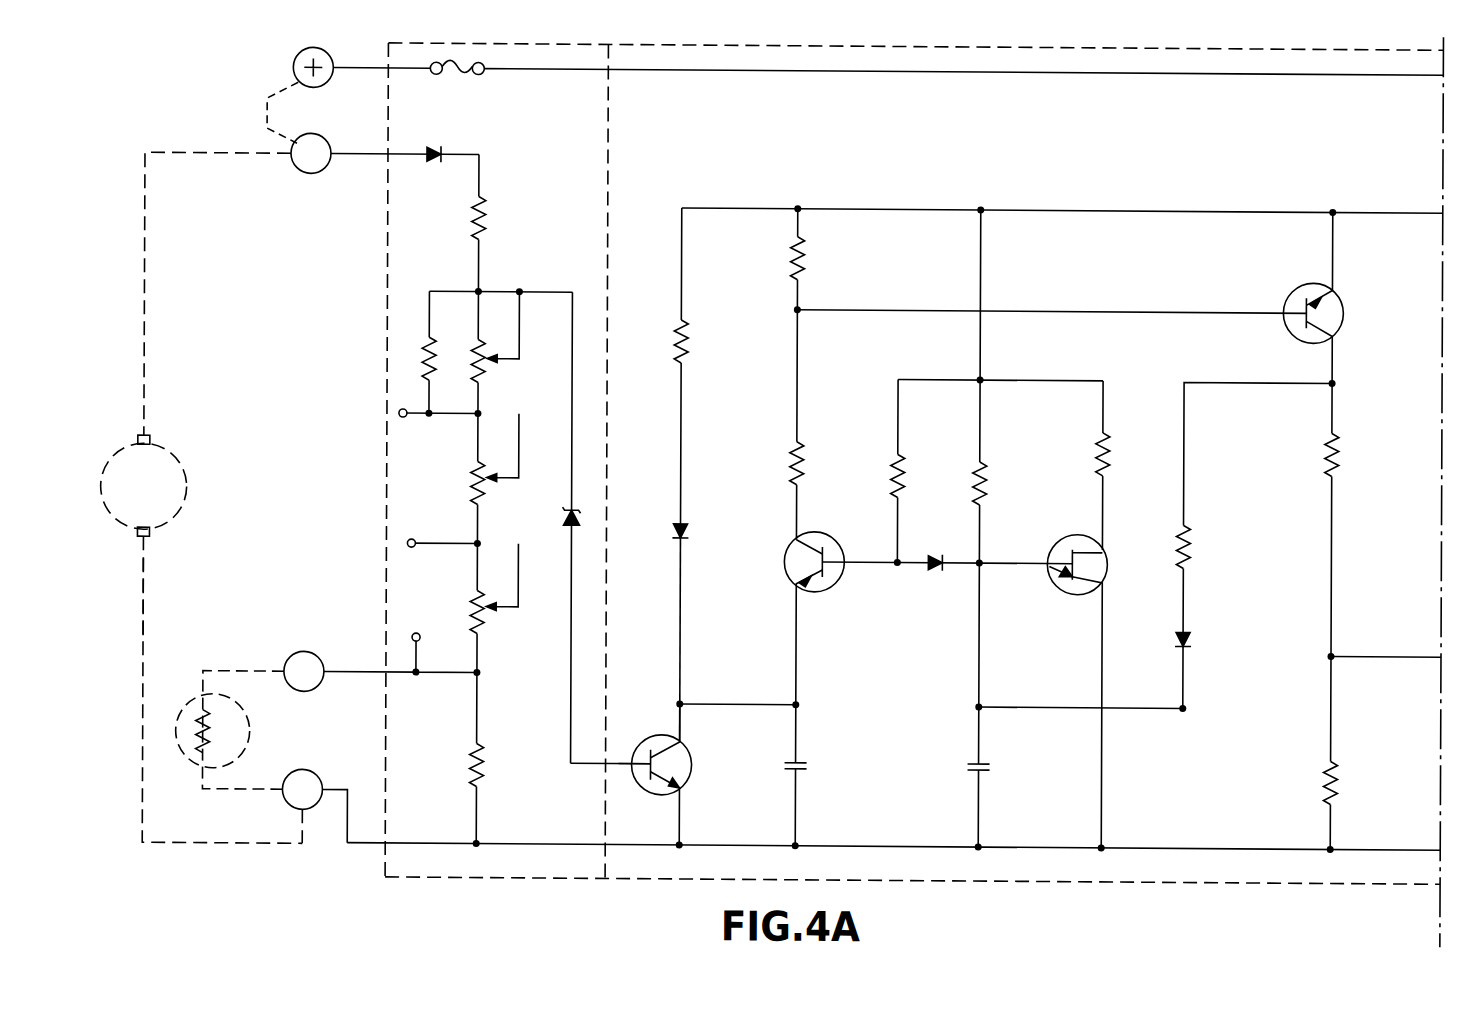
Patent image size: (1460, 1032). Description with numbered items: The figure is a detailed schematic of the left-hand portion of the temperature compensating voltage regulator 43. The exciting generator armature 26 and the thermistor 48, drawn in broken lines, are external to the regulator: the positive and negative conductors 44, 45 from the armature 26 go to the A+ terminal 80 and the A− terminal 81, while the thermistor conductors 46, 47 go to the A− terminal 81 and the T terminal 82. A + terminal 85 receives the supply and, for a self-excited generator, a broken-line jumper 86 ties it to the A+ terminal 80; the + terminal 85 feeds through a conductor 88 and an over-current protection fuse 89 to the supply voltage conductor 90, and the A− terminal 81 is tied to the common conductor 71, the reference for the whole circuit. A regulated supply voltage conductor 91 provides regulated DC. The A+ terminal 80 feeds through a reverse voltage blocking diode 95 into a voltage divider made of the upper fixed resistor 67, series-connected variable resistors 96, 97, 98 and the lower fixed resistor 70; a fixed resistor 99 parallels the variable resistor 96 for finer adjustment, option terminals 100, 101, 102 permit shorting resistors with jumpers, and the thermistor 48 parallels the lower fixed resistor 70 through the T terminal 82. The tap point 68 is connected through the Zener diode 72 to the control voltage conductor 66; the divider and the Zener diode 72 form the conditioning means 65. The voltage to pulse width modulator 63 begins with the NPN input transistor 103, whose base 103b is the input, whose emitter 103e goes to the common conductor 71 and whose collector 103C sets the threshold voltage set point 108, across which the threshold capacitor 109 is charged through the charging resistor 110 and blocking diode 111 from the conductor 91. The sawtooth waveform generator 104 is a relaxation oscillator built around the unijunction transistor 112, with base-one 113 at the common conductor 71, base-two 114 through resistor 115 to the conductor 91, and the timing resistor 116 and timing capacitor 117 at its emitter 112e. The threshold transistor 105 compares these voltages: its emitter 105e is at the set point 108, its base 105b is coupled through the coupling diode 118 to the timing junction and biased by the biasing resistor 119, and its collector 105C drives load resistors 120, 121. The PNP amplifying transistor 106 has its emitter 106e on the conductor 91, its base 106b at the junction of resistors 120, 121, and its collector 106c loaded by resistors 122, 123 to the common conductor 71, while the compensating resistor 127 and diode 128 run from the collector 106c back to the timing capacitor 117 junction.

The exciting generator armature 26 is at (182, 456).
The temperature compensating voltage regulator 43 is at (1378, 50).
The positive conductor 44 is at (152, 304).
The negative conductor 45 is at (146, 608).
The thermistor conductor 46 is at (258, 796).
The thermistor conductor 47 is at (246, 668).
The thermistor 48 is at (189, 700).
The voltage to pulse width modulator 63 is at (921, 138).
The conditioning means 65 is at (560, 163).
The control voltage conductor 66 is at (572, 692).
The upper fixed resistor 67 is at (488, 218).
The voltage divider tap point 68 is at (482, 290).
The lower fixed resistor 70 is at (488, 766).
The common conductor 71 is at (856, 843).
The Zener diode 72 is at (570, 504).
The A+ terminal 80 is at (310, 175).
The A− terminal 81 is at (308, 770).
The T terminal 82 is at (308, 650).
The + terminal 85 is at (306, 48).
The jumper 86 is at (264, 98).
The conductor 88 is at (414, 74).
The over-current protection fuse 89 is at (480, 74).
The supply voltage conductor 90 is at (744, 72).
The regulated supply voltage conductor 91 is at (882, 204).
The reverse voltage blocking diode 95 is at (438, 164).
The variable resistor 96 is at (494, 366).
The variable resistor 97 is at (492, 500).
The variable resistor 98 is at (492, 624).
The fixed resistor 99 is at (414, 338).
The option terminal 100 is at (406, 416).
The option terminal 101 is at (410, 540).
The option terminal 102 is at (416, 632).
The NPN input transistor 103 is at (656, 736).
The base 103b is at (642, 780).
The collector 103C is at (676, 746).
The emitter 103e is at (686, 780).
The free-running sawtooth waveform generator 104 is at (1055, 490).
The NPN threshold transistor 105 is at (820, 538).
The base 105b is at (842, 582).
The collector 105C is at (792, 546).
The emitter 105e is at (788, 576).
The amplifying transistor 106 is at (1300, 284).
The base 106b is at (1294, 306).
The collector 106c is at (1338, 332).
The emitter 106e is at (1336, 300).
The threshold voltage set point 108 is at (684, 696).
The threshold capacitor 109 is at (808, 764).
The charging resistor 110 is at (688, 342).
The reverse voltage blocking diode 111 is at (690, 529).
The unijunction transistor 112 is at (1070, 538).
The emitter 112e is at (1054, 582).
The base-one 113 is at (1100, 578).
The base-two 114 is at (1098, 553).
The resistor 115 is at (1094, 440).
The timing resistor 116 is at (970, 458).
The timing capacitor 117 is at (990, 764).
The coupling diode 118 is at (940, 552).
The biasing resistor 119 is at (890, 474).
The load resistor 120 is at (788, 458).
The load resistor 121 is at (808, 258).
The load resistor 122 is at (1322, 446).
The load resistor 123 is at (1322, 774).
The compensating resistor 127 is at (1192, 548).
The diode 128 is at (1198, 648).